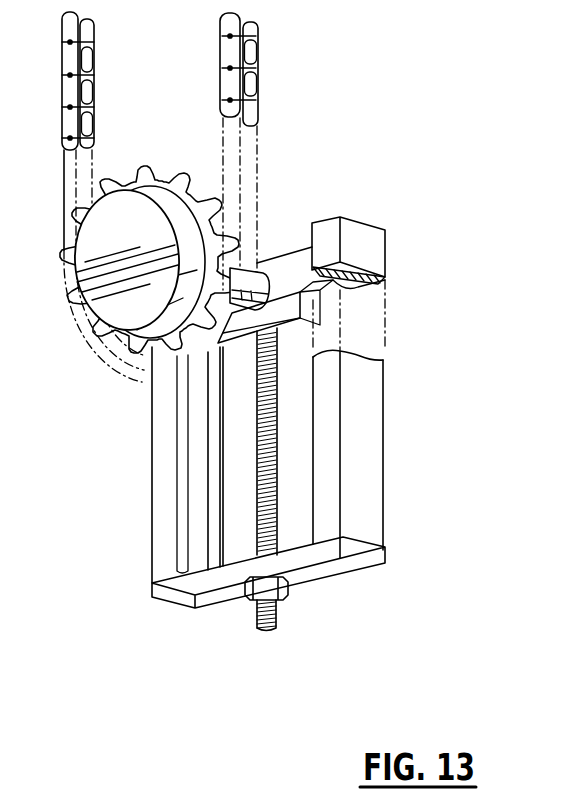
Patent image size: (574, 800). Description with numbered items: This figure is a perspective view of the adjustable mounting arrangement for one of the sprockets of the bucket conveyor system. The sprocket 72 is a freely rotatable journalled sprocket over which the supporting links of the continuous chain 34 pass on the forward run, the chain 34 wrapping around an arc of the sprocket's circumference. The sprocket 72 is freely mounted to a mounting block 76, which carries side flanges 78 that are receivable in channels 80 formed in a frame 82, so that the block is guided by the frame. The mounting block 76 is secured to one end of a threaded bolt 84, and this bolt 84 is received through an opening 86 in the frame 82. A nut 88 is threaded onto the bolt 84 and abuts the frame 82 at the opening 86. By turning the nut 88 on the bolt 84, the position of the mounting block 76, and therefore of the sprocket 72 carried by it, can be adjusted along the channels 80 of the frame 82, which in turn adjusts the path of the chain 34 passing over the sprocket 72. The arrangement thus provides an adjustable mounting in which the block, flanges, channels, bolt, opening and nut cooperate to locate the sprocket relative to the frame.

The chain 34 is at (258, 80).
The sprocket 72 is at (125, 353).
The mounting block 76 is at (290, 262).
The side flange 78 is at (336, 289).
The channel 80 is at (360, 268).
The frame 82 is at (391, 435).
The threaded bolt 84 is at (257, 447).
The opening 86 is at (283, 543).
The nut 88 is at (247, 596).